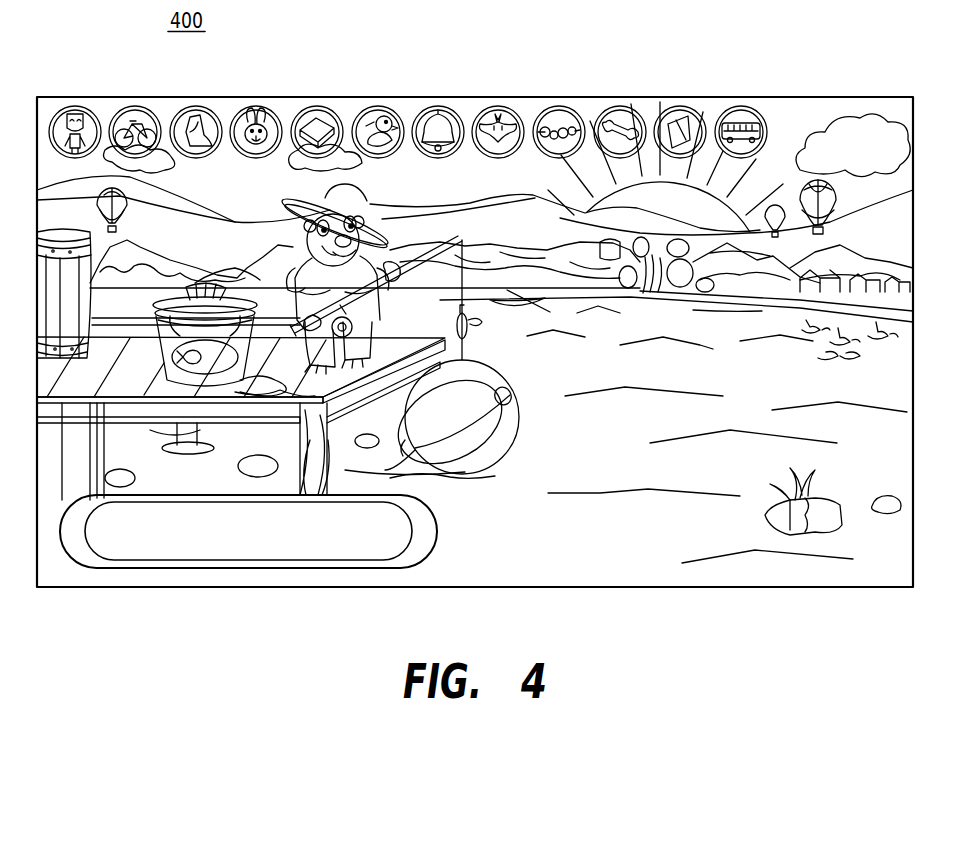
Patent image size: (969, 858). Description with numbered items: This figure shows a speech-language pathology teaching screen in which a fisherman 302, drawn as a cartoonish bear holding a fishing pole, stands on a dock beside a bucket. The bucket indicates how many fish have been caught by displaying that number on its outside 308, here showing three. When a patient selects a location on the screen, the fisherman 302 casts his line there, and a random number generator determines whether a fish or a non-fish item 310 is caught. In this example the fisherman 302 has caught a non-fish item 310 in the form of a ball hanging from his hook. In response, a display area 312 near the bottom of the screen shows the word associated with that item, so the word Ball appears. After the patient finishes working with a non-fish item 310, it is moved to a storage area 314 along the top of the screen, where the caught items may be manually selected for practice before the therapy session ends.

The fisherman 302 is at (368, 203).
The outside of bucket 308 is at (210, 367).
The non-fish item 310 is at (516, 390).
The display area 312 is at (440, 547).
The storage area 314 is at (464, 163).